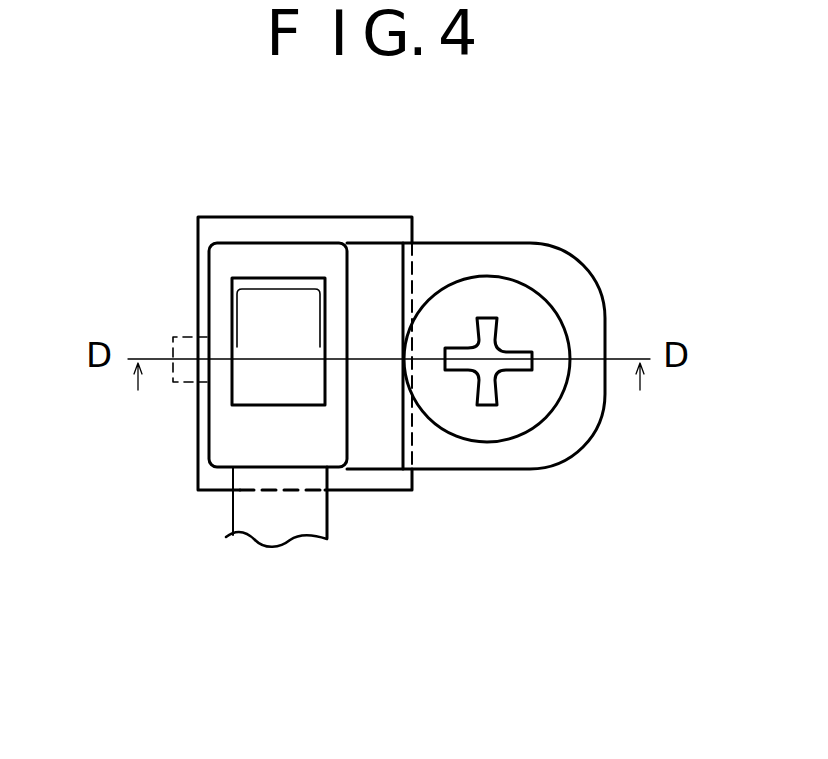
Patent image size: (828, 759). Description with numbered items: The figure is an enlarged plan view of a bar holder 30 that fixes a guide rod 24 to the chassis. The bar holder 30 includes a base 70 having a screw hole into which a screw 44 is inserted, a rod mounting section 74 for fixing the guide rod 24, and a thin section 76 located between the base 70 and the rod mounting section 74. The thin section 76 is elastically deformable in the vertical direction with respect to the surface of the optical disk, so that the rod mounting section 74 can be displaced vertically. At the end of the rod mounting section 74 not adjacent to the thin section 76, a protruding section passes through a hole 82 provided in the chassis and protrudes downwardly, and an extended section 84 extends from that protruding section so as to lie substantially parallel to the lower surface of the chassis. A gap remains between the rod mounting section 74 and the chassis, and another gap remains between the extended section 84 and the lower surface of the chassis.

The guide rod 24 is at (250, 506).
The bar holder 30 is at (538, 474).
The screw 44 is at (545, 330).
The base 70 is at (503, 257).
The rod mounting section 74 is at (227, 263).
The thin section 76 is at (373, 262).
The hole 82 is at (380, 478).
The extended section 84 is at (175, 378).